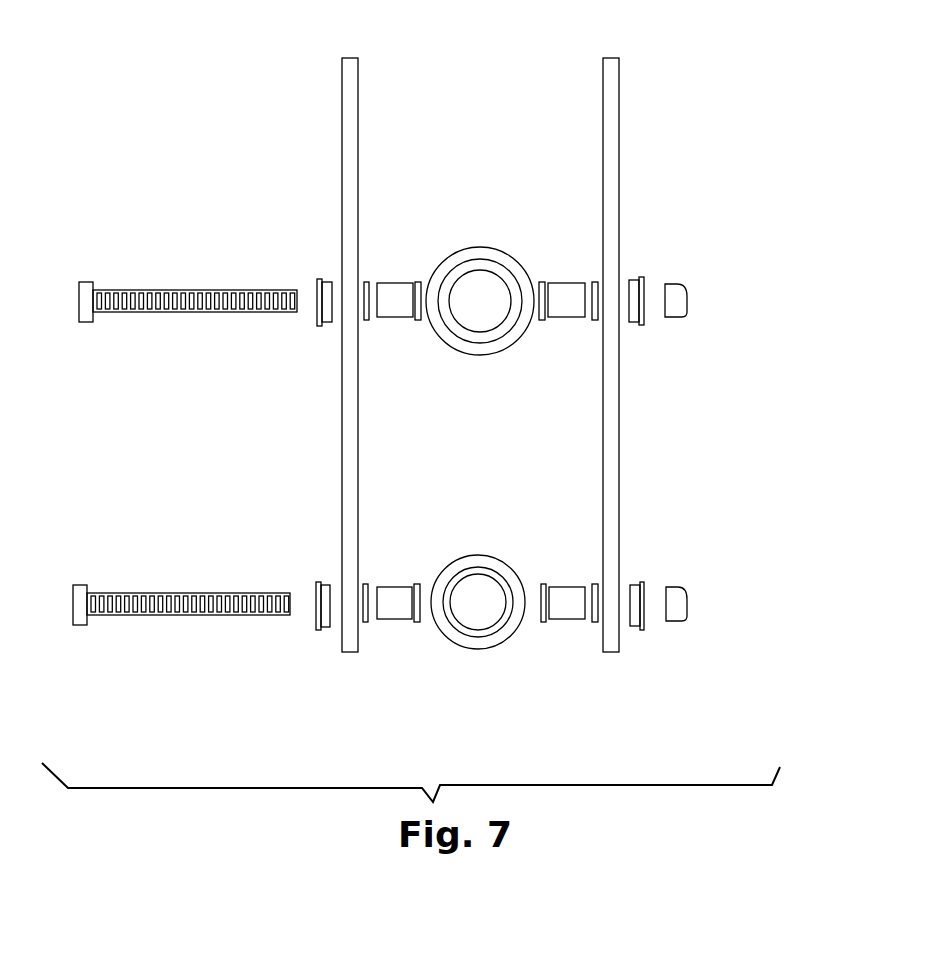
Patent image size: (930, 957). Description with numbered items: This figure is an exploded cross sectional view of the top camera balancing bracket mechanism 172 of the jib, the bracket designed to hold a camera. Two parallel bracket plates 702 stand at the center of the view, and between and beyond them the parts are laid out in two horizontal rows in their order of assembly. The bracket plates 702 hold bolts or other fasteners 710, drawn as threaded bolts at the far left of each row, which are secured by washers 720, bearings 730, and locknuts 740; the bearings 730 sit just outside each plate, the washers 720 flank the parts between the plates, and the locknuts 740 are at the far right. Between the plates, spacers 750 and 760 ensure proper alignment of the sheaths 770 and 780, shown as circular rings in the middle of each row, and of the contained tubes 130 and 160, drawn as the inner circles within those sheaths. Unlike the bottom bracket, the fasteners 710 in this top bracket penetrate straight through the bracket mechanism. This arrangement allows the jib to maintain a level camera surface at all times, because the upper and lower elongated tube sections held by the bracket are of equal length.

The camera balancing bracket mechanism 172 is at (498, 98).
The bracket plates 702 is at (342, 403).
The fasteners 710 is at (134, 290).
The washers 720 is at (418, 282).
The bearings 730 is at (328, 280).
The locknuts 740 is at (687, 298).
The spacers 750 is at (392, 619).
The spacers 760 is at (393, 317).
The sheath 770 is at (438, 336).
The sheath 780 is at (448, 638).
The tube 130 is at (498, 333).
The tube 160 is at (498, 630).